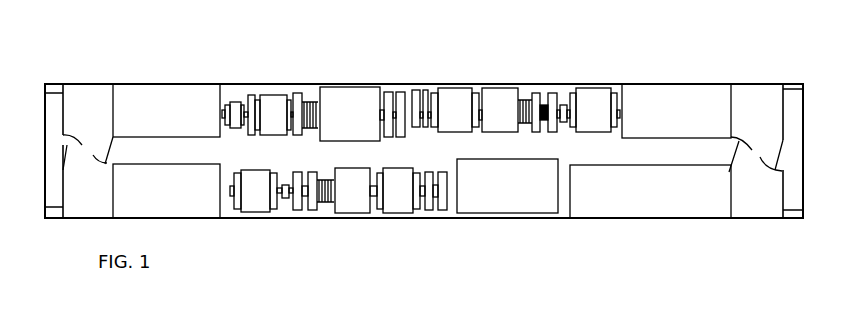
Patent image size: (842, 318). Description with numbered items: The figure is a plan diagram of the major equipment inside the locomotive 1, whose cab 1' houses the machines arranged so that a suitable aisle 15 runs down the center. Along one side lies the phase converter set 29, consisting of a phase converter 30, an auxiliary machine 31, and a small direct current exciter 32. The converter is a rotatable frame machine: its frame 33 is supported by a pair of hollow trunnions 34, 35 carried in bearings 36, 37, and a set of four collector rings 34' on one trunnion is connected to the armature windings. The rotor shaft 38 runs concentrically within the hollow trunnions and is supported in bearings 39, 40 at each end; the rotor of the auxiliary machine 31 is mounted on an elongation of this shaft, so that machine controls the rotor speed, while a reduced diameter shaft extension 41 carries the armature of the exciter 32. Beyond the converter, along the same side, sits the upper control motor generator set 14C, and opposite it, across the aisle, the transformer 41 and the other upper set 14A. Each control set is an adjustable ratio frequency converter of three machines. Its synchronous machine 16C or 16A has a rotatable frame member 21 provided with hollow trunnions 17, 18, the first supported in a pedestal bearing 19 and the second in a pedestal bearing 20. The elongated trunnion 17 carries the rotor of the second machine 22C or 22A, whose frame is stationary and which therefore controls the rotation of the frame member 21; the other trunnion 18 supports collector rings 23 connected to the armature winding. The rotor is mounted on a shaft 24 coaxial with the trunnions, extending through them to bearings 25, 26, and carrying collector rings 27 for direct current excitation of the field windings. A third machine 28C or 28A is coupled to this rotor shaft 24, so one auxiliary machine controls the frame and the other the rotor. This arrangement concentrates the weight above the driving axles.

The rail vehicle car body 1 is at (430, 139).
The locomotive cab 1' is at (395, 232).
The control motor generator set 14A is at (378, 223).
The control motor generator set 14C is at (538, 73).
The aisle 15 is at (523, 121).
The synchronous machine 16A is at (352, 190).
The synchronous machine 16C is at (500, 110).
The hollow trunnion 17 is at (480, 92).
The hollow trunnion 18 is at (533, 94).
The pedestal bearing 19 is at (425, 93).
The pedestal bearing 20 is at (544, 93).
The rotatable frame member 21 is at (499, 88).
The second machine 22A is at (398, 190).
The second machine 22C is at (455, 110).
The collector rings 23 is at (541, 121).
The rotor shaft 24 is at (425, 128).
The bearing 25 is at (417, 92).
The bearing 26 is at (559, 93).
The collector rings 27 is at (548, 124).
The third machine 28A is at (253, 191).
The third machine 28C is at (595, 110).
The phase converter set 29 is at (311, 86).
The phase converter 30 is at (350, 114).
The auxiliary machine 31 is at (273, 115).
The direct current exciter 32 is at (229, 101).
The frame 33 is at (325, 88).
The hollow trunnion 34 is at (306, 109).
The collector rings 34' is at (313, 130).
The hollow trunnion 35 is at (381, 96).
The bearing 36 is at (292, 97).
The bearing 37 is at (390, 93).
The rotor shaft 38 is at (292, 135).
The bearing 39 is at (252, 124).
The bearing 40 is at (401, 125).
The transformer 41 is at (249, 97).